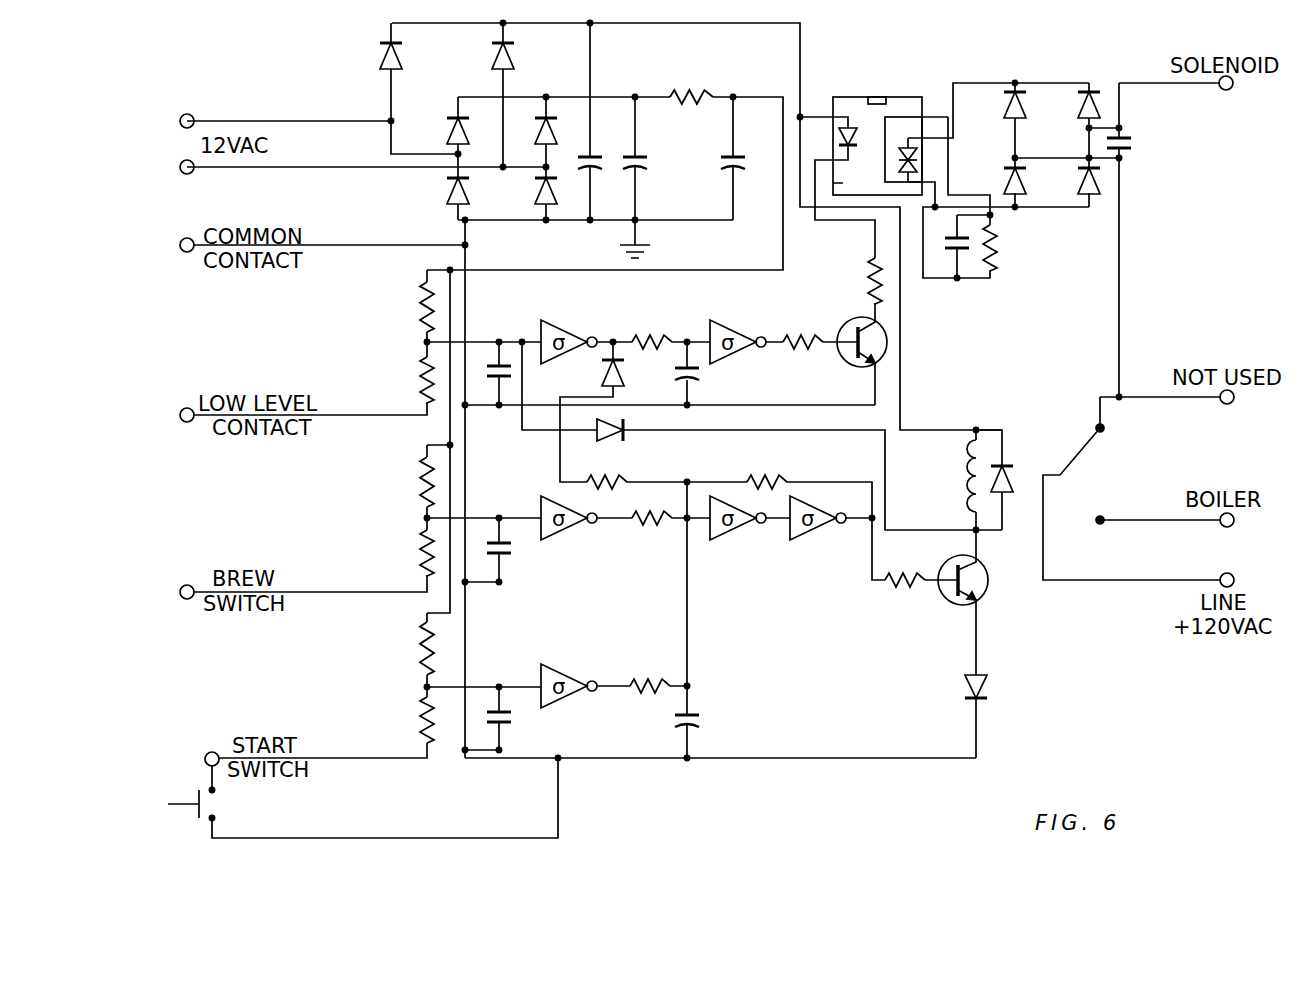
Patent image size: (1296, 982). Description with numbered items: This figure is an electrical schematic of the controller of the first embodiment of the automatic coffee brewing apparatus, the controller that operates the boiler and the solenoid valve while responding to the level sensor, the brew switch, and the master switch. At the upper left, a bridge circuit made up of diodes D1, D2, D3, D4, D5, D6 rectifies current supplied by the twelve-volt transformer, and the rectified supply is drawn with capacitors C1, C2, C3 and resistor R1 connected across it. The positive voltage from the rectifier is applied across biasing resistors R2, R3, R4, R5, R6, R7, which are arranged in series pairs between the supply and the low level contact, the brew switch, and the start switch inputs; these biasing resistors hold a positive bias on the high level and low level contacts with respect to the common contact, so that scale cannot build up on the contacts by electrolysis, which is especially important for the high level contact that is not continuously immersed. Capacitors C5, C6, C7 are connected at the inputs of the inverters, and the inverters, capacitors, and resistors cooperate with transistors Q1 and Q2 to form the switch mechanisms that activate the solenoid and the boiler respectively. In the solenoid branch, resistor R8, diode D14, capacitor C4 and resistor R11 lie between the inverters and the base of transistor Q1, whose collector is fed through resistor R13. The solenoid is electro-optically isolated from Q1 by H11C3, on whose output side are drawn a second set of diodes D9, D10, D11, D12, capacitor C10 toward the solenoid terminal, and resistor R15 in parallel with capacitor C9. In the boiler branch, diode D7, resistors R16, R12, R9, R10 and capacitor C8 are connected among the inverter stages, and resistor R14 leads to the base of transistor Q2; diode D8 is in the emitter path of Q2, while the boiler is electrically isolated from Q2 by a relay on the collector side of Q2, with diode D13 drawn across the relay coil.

The bridge circuit diode D1 is at (405, 72).
The bridge circuit diode D2 is at (488, 57).
The bridge circuit diode D3 is at (444, 133).
The bridge circuit diode D4 is at (532, 133).
The bridge circuit diode D5 is at (444, 193).
The bridge circuit diode D6 is at (532, 193).
The filter capacitor C1 is at (599, 146).
The filter capacitor 47/35 C2 is at (662, 158).
The resistor 11K R1 is at (692, 101).
The capacitor 220 C3 is at (750, 158).
The electro-optical isolator H11C3 is at (880, 133).
The bridge diode 4005 D9 is at (1023, 125).
The bridge diode D10 is at (1068, 105).
The bridge diode D11 is at (994, 181).
The bridge diode D12 is at (1068, 181).
The capacitor .047 250V C10 is at (1145, 147).
The resistor 27K R15 is at (1012, 250).
The capacitor C9 is at (947, 257).
The resistor 680 R13 is at (850, 280).
The biasing resistor R2 is at (400, 307).
The biasing resistor R3 is at (405, 378).
The biasing resistor R4 is at (400, 483).
The biasing resistor R5 is at (405, 553).
The biasing resistor R6 is at (399, 649).
The biasing resistor R7 is at (404, 722).
The capacitor .001 C5 is at (493, 399).
The capacitor C6 is at (490, 560).
The capacitor .001 C7 is at (512, 730).
The resistor 47K R8 is at (653, 344).
The diode D14 is at (593, 375).
The capacitor 22/50 C4 is at (708, 374).
The resistor 47K R11 is at (804, 344).
The transistor Q1 is at (862, 353).
The diode D7 is at (598, 425).
The resistor 2K R16 is at (627, 470).
The resistor 47K R12 is at (796, 470).
The resistor 47K R9 is at (651, 519).
The resistor 47K R10 is at (650, 687).
The capacitor 4.7 C8 is at (710, 716).
The resistor 47K R14 is at (908, 581).
The transistor Q2 is at (963, 591).
The diode 4005 D8 is at (949, 690).
The diode 4005 D13 is at (1018, 497).